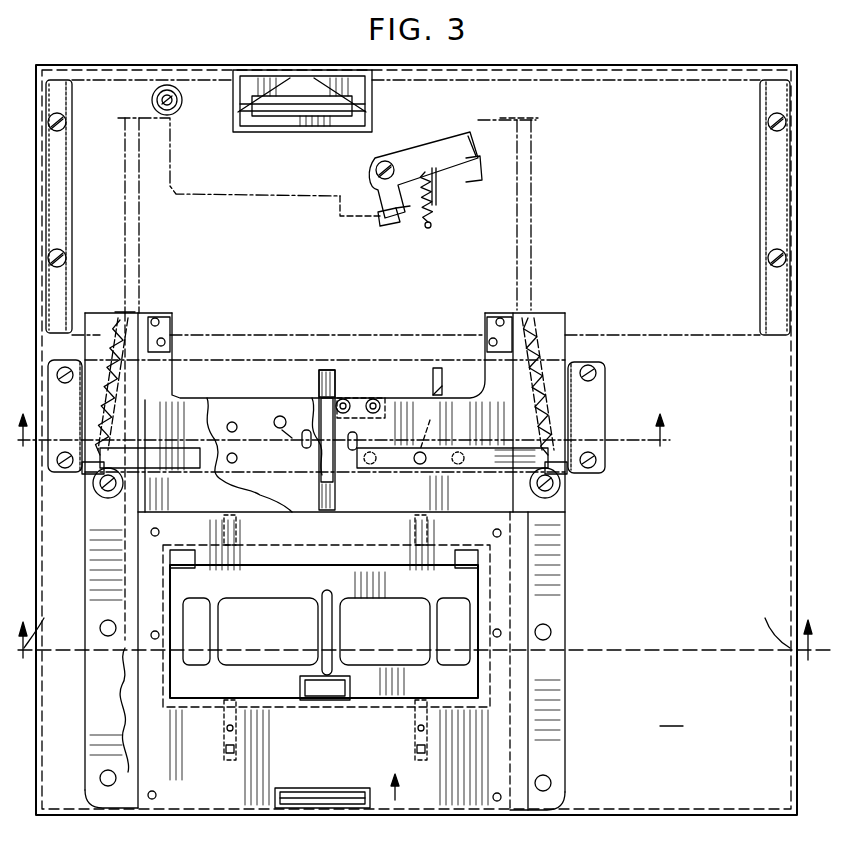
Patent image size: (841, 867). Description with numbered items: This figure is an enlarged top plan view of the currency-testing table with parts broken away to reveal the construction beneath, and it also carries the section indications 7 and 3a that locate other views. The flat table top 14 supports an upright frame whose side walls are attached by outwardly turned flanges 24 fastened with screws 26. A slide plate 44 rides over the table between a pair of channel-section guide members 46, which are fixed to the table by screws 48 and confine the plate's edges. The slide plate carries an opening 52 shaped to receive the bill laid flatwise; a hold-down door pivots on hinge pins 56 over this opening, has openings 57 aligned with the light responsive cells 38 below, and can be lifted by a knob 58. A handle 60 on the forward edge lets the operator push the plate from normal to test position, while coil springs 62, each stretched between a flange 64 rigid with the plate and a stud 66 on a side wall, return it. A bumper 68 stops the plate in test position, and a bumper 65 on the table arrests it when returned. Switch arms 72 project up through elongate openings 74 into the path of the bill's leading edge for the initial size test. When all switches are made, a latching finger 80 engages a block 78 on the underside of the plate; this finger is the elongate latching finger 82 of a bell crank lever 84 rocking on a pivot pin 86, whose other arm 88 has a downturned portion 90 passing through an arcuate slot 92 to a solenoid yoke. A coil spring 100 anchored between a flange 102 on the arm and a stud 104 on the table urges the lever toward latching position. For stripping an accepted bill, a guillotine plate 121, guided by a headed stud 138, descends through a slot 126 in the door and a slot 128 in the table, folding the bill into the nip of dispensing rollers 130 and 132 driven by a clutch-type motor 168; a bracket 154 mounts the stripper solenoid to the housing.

The table top 14 is at (671, 716).
The flanges 24 is at (590, 392).
The screws 26 is at (596, 374).
The light responsive cells 38 is at (426, 446).
The slide plate 44 is at (397, 804).
The guide members 46 is at (566, 690).
The screws 48 is at (100, 780).
The opening 52 is at (186, 696).
The hinge pins 56 is at (200, 552).
The openings 57 is at (210, 632).
The handle or knob 58 is at (312, 702).
The handle 60 is at (312, 800).
The coil springs 62 is at (140, 336).
The flange 64 is at (132, 316).
The bumper 65 is at (98, 490).
The stud 66 is at (95, 472).
The bumper 68 is at (174, 88).
The switch arm 72 is at (444, 388).
The openings 74 is at (437, 368).
The abutment or block 78 is at (344, 220).
The latching finger 80 is at (382, 224).
The latching finger 82 is at (402, 226).
The bell crank lever 84 is at (410, 150).
The pivot pin 86 is at (374, 170).
The arm 88 is at (436, 146).
The downturned portion 90 is at (478, 124).
The arcuate slot 92 is at (484, 166).
The coil spring 100 is at (436, 204).
The flange 102 is at (438, 186).
The stud 104 is at (432, 228).
The guillotine plate 121 is at (302, 446).
The slot 126 is at (333, 620).
The slot 128 is at (318, 476).
The dispensing roller 130 is at (336, 380).
The dispensing roller 132 is at (319, 380).
The headed stud 138 is at (233, 424).
The bracket 154 is at (392, 684).
The clutch-type motor 168 is at (300, 130).
The section line 7 is at (339, 421).
The section line 3a is at (415, 629).